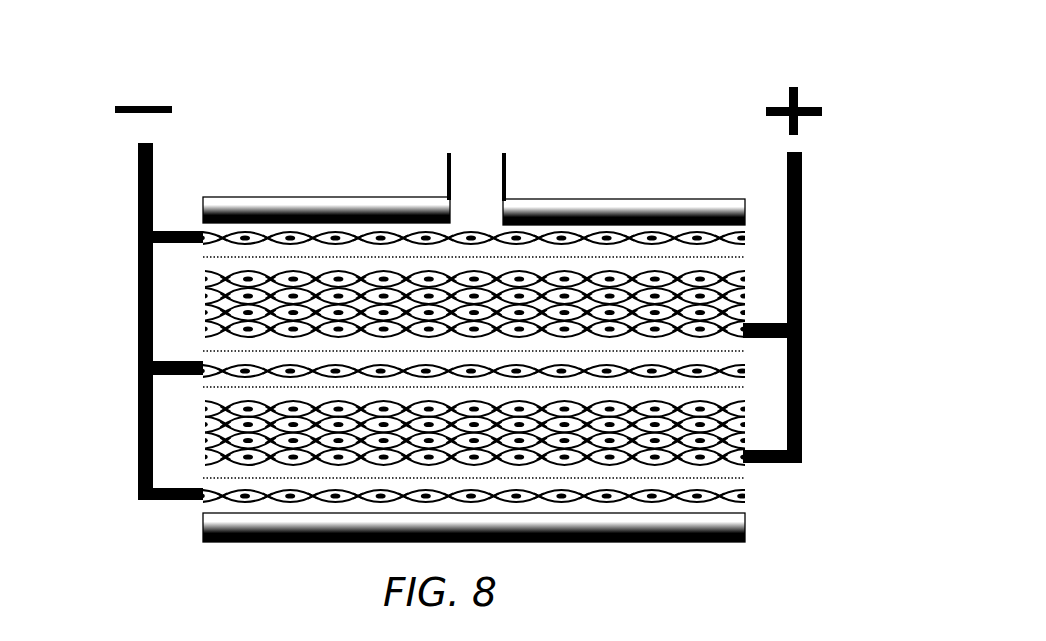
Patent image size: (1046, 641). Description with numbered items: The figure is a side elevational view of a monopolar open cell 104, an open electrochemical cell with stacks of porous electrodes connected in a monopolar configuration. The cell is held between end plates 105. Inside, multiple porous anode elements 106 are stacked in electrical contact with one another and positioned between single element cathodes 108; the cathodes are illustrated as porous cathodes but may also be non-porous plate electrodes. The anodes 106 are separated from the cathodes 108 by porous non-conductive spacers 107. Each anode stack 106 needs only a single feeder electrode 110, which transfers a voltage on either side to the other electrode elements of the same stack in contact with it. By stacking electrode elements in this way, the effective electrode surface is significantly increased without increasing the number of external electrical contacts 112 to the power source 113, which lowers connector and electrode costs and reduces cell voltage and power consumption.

The monopolar open cell 104 is at (593, 173).
The end plates 105 is at (317, 197).
The porous anode elements 106 is at (207, 305).
The porous non-conductive spacers 107 is at (743, 260).
The single element cathodes 108 is at (738, 240).
The feeder electrode 110 is at (220, 325).
The external electrical contacts 112 is at (772, 322).
The power source 113 is at (148, 107).